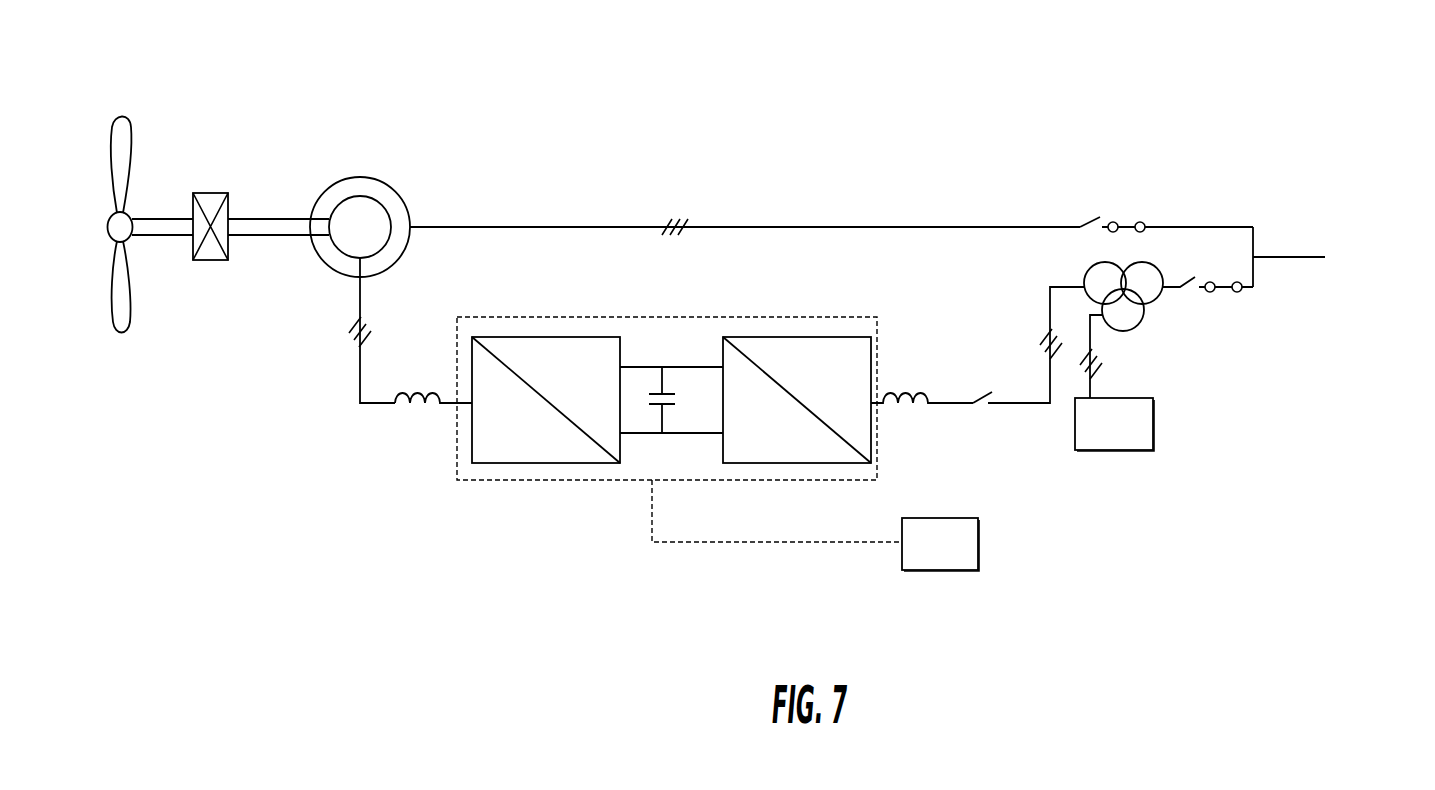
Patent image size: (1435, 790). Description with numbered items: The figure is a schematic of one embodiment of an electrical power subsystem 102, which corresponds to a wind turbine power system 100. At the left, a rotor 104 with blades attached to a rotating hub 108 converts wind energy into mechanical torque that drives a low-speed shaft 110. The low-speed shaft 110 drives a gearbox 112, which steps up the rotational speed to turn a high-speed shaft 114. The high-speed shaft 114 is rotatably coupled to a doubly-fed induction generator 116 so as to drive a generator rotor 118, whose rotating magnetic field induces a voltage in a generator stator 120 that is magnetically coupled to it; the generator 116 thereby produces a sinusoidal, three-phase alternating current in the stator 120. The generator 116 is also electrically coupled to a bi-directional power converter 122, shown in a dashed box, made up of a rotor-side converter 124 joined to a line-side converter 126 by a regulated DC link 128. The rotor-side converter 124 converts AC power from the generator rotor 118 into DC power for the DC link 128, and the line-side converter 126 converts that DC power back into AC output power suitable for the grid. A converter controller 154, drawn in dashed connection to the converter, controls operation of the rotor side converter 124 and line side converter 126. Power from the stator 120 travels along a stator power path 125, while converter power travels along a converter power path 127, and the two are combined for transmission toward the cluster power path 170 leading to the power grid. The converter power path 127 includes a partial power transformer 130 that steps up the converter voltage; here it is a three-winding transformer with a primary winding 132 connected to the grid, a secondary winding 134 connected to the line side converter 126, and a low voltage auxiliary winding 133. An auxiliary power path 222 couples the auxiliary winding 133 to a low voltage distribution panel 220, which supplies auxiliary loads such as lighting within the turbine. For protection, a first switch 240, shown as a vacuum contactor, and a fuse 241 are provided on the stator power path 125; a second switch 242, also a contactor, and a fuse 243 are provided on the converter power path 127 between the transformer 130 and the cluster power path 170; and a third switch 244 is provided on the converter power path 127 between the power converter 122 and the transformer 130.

The wind turbine power system 100 is at (127, 90).
The electrical power subsystem 102 is at (1005, 117).
The rotor 104 is at (93, 234).
The rotating hub 108 is at (107, 229).
The low-speed shaft 110 is at (148, 236).
The gearbox 112 is at (208, 193).
The high-speed shaft 114 is at (244, 237).
The doubly-fed induction generator 116 is at (382, 172).
The generator rotor 118 is at (347, 277).
The generator stator 120 is at (324, 192).
The bi-directional power converter 122 is at (597, 486).
The rotor-side converter 124 is at (535, 337).
The stator power path 125 is at (728, 227).
The line-side converter 126 is at (798, 337).
The converter power path 127 is at (1051, 373).
The regulated DC link 128 is at (666, 356).
The partial power transformer 130 is at (1148, 322).
The primary winding 132 is at (1160, 266).
The auxiliary winding 133 is at (1137, 330).
The secondary winding 134 is at (1086, 276).
The converter controller 154 is at (957, 556).
The cluster power path 170 is at (1284, 264).
The low voltage distribution panel 220 is at (1132, 436).
The auxiliary power path 222 is at (1093, 340).
The first switch 240 is at (1084, 217).
The fuse 241 is at (1131, 215).
The second switch 242 is at (1190, 298).
The fuse 243 is at (1240, 296).
The third switch 244 is at (980, 407).